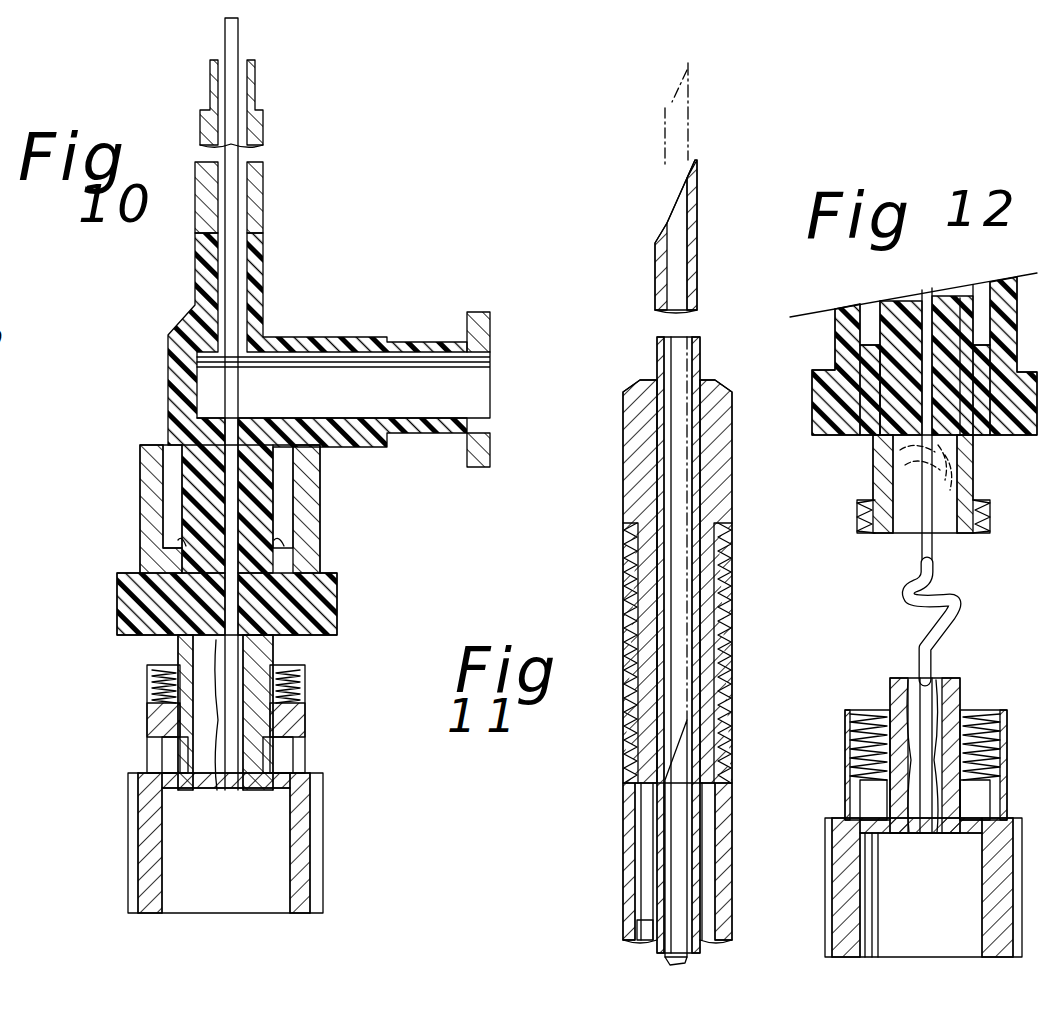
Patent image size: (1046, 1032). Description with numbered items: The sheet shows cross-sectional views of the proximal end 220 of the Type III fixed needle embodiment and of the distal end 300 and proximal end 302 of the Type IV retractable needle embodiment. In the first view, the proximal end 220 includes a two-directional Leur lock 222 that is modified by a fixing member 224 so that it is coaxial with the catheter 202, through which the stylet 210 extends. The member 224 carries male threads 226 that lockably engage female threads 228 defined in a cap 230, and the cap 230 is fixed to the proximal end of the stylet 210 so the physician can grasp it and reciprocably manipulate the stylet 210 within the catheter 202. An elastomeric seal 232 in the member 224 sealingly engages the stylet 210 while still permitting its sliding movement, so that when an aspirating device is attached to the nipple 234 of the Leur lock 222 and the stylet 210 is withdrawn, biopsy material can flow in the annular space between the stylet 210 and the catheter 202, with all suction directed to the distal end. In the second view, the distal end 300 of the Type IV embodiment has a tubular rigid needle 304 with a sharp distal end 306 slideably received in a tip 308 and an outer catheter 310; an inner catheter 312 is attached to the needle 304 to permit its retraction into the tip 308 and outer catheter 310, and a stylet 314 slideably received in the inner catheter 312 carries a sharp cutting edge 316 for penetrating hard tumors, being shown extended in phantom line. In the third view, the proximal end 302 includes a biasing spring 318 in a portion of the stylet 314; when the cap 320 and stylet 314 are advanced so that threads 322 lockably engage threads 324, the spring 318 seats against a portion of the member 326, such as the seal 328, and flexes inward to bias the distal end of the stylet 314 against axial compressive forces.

In FIG. 10, the stylet 210 is at (236, 46).
In FIG. 10, the catheter 202 is at (257, 94).
In FIG. 10, the proximal end 220 is at (283, 537).
In FIG. 10, the two-directional Leur lock 222 is at (266, 333).
In FIG. 10, the nipple 234 is at (470, 311).
In FIG. 10, the member 224 is at (138, 545).
In FIG. 10, the elastomeric seal 232 is at (258, 513).
In FIG. 10, the female threads 228 is at (176, 668).
In FIG. 10, the male threads 226 is at (290, 706).
In FIG. 10, the cap 230 is at (138, 868).
In FIG. 11, the distal end 300 is at (659, 514).
In FIG. 11, the tubular rigid needle 304 is at (658, 360).
In FIG. 11, the sharp distal end 306 is at (686, 165).
In FIG. 11, the tip 308 is at (630, 437).
In FIG. 11, the outer catheter 310 is at (627, 812).
In FIG. 11, the inner catheter 312 is at (650, 935).
In FIG. 11, the stylet 314 is at (672, 138).
In FIG. 12, the stylet 314 is at (925, 520).
In FIG. 11, the sharp cutting edge 316 is at (670, 92).
In FIG. 12, the biasing spring 318 is at (880, 470).
In FIG. 12, the proximal end 302 is at (898, 615).
In FIG. 12, the cap 320 is at (848, 905).
In FIG. 12, the threads 322 is at (872, 708).
In FIG. 12, the threads 324 is at (985, 530).
In FIG. 12, the member 326 is at (835, 350).
In FIG. 12, the seal 328 is at (968, 440).